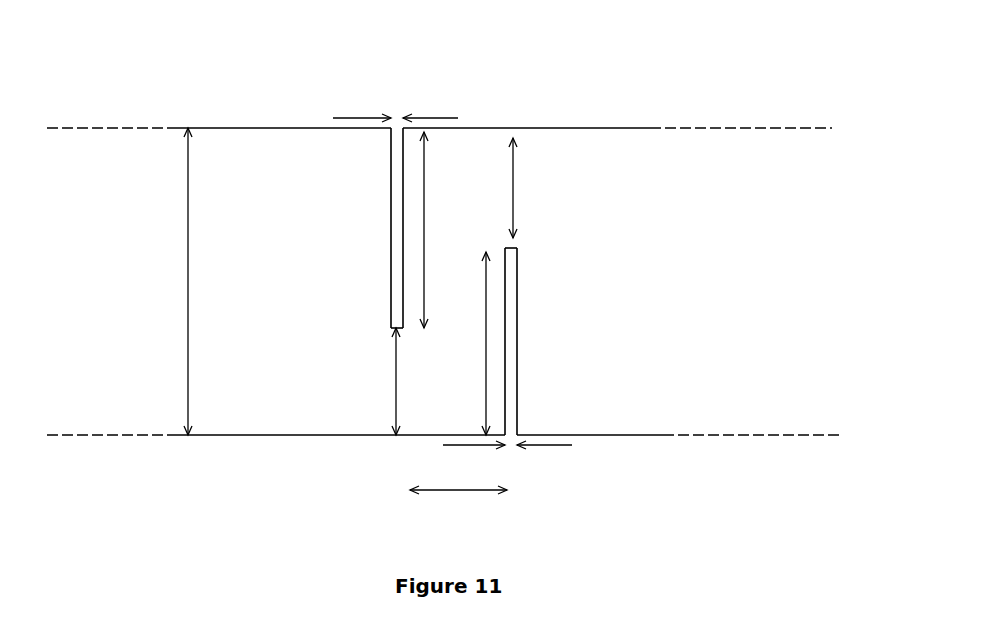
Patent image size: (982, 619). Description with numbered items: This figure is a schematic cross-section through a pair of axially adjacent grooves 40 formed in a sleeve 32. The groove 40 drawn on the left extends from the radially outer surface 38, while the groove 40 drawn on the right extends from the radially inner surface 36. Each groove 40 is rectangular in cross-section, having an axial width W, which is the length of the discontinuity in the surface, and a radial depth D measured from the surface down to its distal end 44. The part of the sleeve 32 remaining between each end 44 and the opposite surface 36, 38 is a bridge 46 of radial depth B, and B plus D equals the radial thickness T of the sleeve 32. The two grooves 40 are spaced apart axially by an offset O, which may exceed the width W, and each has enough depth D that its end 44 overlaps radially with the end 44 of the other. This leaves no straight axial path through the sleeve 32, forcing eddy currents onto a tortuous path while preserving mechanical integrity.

The sleeve 32 is at (444, 289).
The radially inner surface 36 is at (595, 435).
The radially outer surface 38 is at (485, 128).
The groove 40 is at (391, 228).
The end 44 is at (392, 330).
The bridge 46 is at (530, 171).